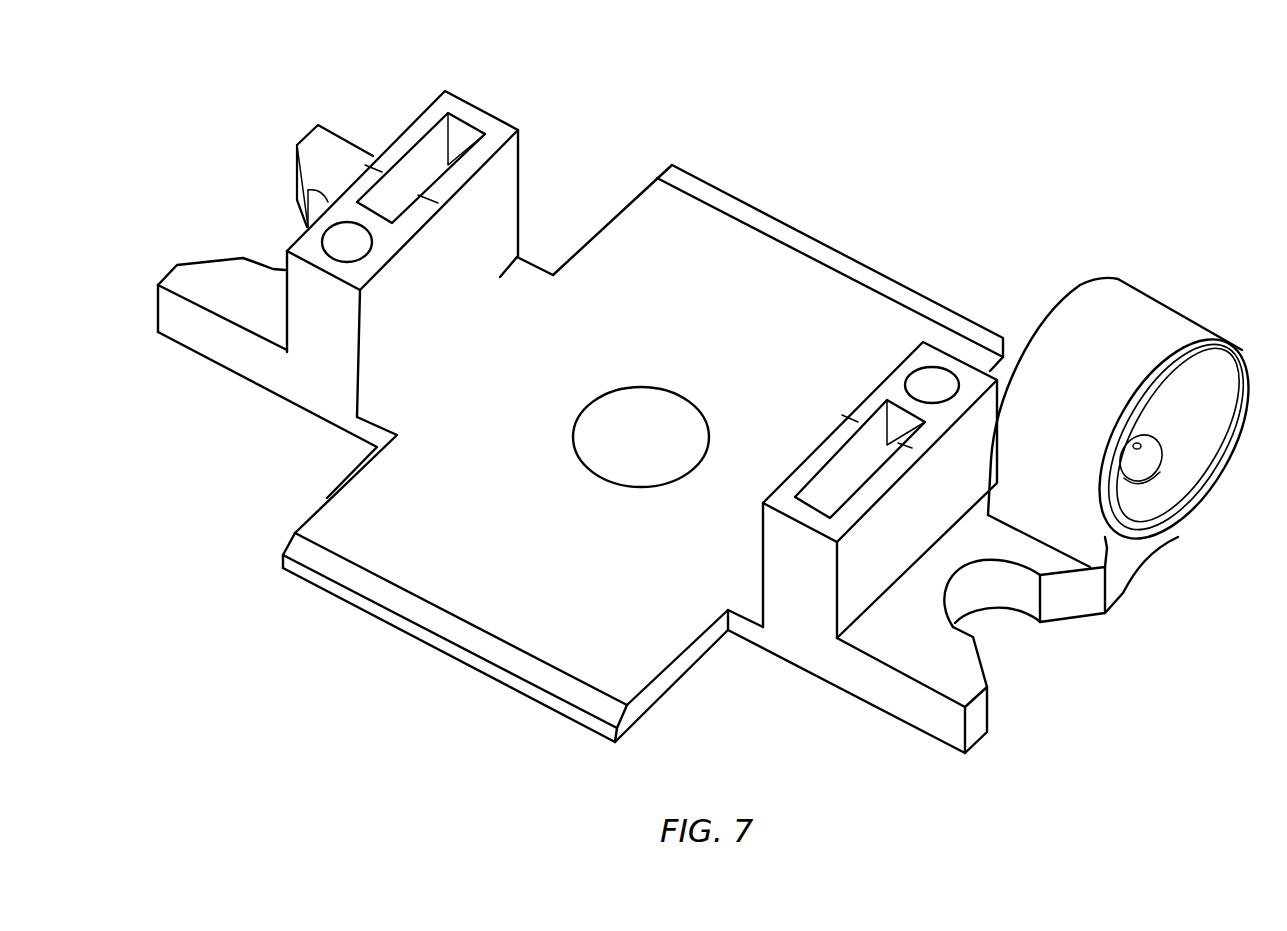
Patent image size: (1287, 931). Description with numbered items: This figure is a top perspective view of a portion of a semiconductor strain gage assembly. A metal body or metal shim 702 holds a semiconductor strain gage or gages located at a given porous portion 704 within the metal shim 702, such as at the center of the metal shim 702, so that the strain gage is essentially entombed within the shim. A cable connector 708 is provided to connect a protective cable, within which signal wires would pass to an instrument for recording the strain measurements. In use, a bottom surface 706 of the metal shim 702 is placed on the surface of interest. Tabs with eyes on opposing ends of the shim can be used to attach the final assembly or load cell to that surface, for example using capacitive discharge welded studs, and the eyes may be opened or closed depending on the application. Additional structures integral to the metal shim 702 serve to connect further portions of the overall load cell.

The metal shim 702 is at (327, 498).
The porous portion 704 is at (665, 405).
The bottom surface 706 is at (369, 638).
The cable connector 708 is at (1180, 313).